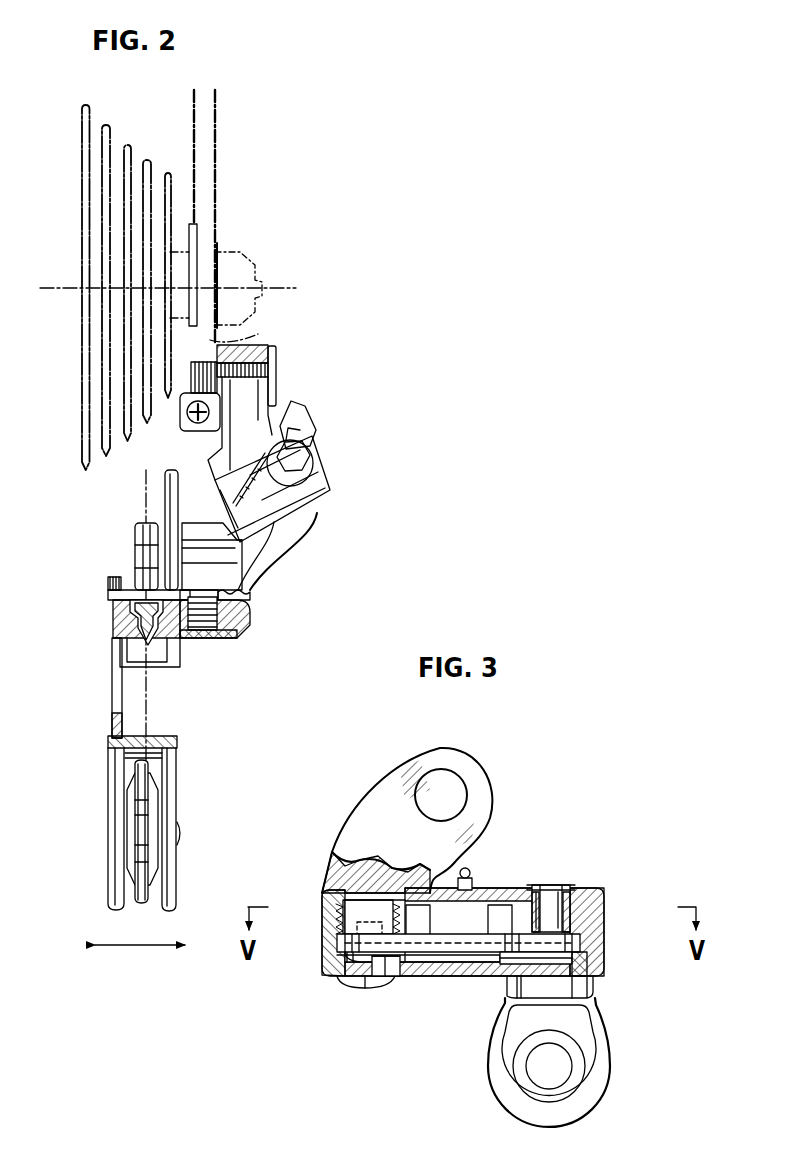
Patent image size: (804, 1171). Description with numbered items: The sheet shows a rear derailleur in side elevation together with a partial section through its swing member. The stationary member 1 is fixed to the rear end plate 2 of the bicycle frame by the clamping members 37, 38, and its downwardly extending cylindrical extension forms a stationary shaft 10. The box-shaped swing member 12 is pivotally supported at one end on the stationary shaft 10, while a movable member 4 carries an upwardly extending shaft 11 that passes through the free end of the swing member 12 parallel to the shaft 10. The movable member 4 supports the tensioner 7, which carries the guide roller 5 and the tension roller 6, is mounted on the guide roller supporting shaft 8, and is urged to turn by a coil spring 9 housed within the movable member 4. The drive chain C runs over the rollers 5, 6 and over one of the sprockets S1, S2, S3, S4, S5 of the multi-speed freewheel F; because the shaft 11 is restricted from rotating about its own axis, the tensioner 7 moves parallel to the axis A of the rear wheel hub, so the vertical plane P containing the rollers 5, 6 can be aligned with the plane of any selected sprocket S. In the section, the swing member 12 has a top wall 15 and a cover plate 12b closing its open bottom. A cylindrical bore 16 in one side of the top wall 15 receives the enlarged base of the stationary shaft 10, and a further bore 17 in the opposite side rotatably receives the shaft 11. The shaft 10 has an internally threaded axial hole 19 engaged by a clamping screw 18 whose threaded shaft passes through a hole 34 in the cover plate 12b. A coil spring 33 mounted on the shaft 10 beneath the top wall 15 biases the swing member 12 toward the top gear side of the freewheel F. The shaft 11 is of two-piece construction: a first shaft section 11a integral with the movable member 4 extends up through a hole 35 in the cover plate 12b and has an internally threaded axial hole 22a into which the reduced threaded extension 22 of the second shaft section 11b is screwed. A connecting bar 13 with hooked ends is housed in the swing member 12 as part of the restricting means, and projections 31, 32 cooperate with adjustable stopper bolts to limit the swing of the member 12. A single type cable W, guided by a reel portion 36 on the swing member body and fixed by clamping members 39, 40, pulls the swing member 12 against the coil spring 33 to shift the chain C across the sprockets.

In FIG. 2, the stationary member 1 is at (254, 393).
In FIG. 3, the stationary member 1 is at (385, 795).
In FIG. 2, the rear end plate 2 is at (236, 338).
In FIG. 2, the movable member 4 is at (280, 540).
In FIG. 3, the movable member 4 is at (565, 1022).
In FIG. 2, the guide roller 5 is at (132, 540).
In FIG. 2, the tension roller 6 is at (128, 806).
In FIG. 2, the tensioner 7 is at (108, 689).
In FIG. 2, the guide roller supporting shaft 8 is at (112, 580).
In FIG. 2, the coil spring 9 is at (212, 626).
In FIG. 3, the stationary shaft 10 is at (352, 920).
In FIG. 3, the shaft 11 is at (600, 895).
In FIG. 3, the first shaft section 11a is at (560, 992).
In FIG. 3, the second shaft section 11b is at (548, 905).
In FIG. 2, the swing member 12 is at (335, 484).
In FIG. 3, the swing member 12 is at (610, 946).
In FIG. 3, the cover plate 12b is at (428, 985).
In FIG. 3, the connecting bar 13 is at (464, 984).
In FIG. 3, the top wall 15 is at (514, 900).
In FIG. 3, the cylindrical bore 16 is at (362, 866).
In FIG. 3, the bore 17 is at (530, 892).
In FIG. 3, the clamping screw 18 is at (378, 984).
In FIG. 3, the internally threaded axial hole 19 is at (330, 956).
In FIG. 3, the threaded extension 22 is at (598, 928).
In FIG. 3, the internally threaded axial hole 22a is at (510, 996).
In FIG. 3, the projection 31 is at (418, 912).
In FIG. 3, the small projection 32 is at (500, 918).
In FIG. 3, the coil spring 33 is at (336, 906).
In FIG. 3, the hole 34 is at (356, 984).
In FIG. 3, the hole 35 is at (580, 966).
In FIG. 2, the reel portion 36 is at (303, 426).
In FIG. 2, the clamping member 37 is at (272, 355).
In FIG. 2, the clamping member 38 is at (190, 398).
In FIG. 2, the clamping member 39 is at (305, 458).
In FIG. 2, the clamping member 40 is at (320, 500).
In FIG. 2, the axis A is at (284, 287).
In FIG. 2, the drive chain C is at (150, 714).
In FIG. 2, the multi-speed freewheel F is at (78, 440).
In FIG. 2, the vertical plane P is at (142, 483).
In FIG. 2, the sprocket S is at (140, 345).
In FIG. 2, the sprocket S1 is at (167, 172).
In FIG. 2, the sprocket S2 is at (147, 159).
In FIG. 2, the sprocket S3 is at (127, 144).
In FIG. 2, the sprocket S4 is at (106, 124).
In FIG. 2, the sprocket S5 is at (86, 104).
In FIG. 2, the single type cable W is at (296, 405).